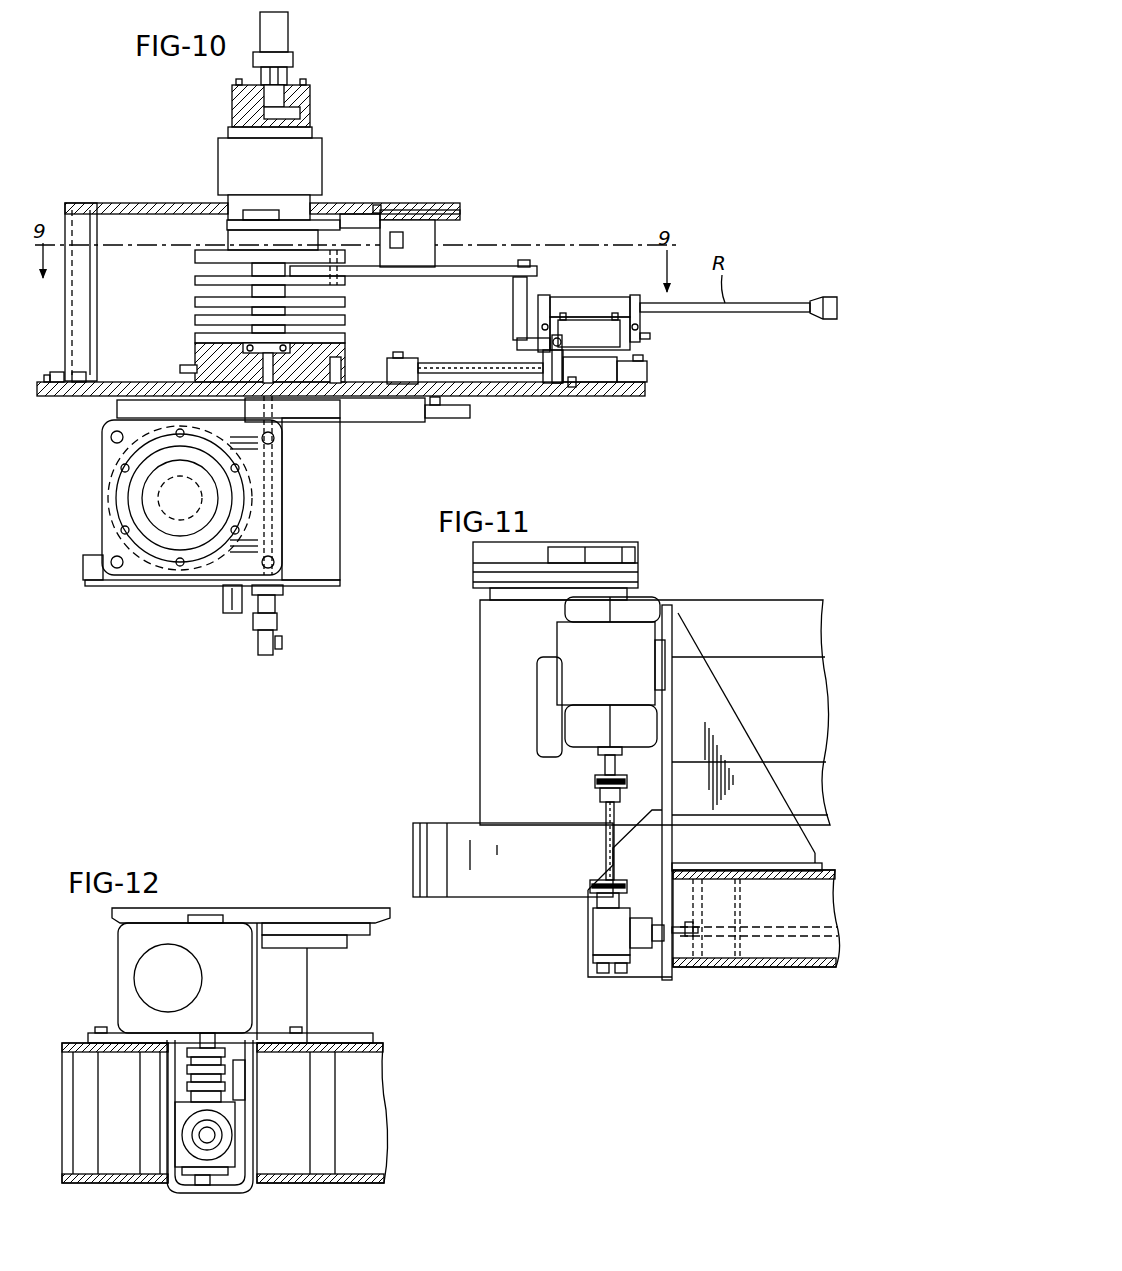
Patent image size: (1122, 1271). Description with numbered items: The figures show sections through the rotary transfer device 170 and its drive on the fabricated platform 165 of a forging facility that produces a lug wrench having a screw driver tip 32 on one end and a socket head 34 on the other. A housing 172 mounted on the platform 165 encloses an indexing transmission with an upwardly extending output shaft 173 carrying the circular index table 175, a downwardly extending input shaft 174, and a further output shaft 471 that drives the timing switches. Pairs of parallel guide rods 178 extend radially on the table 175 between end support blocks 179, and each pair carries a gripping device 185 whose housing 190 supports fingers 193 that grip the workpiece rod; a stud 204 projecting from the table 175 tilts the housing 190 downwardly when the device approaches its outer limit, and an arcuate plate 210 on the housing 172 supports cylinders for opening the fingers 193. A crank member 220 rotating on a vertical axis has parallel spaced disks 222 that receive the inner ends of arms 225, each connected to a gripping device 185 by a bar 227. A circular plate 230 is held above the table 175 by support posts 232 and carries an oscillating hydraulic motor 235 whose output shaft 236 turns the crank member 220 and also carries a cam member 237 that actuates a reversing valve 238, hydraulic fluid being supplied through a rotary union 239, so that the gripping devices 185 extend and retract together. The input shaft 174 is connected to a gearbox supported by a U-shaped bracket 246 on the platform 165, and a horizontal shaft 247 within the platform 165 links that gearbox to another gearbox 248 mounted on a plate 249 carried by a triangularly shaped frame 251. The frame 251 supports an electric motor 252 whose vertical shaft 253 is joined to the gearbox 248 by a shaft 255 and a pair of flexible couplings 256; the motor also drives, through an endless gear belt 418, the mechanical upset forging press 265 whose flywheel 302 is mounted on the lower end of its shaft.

In FIG. 10, the rotary union 239 is at (288, 30).
In FIG. 10, the oscillating hydraulic motor 235 is at (218, 152).
In FIG. 10, the output shaft 236 is at (268, 212).
In FIG. 10, the circular plate 230 is at (92, 205).
In FIG. 10, the support posts 232 is at (97, 310).
In FIG. 10, the circular index table 175 is at (600, 397).
In FIG. 10, the crank member 220 is at (208, 243).
In FIG. 10, the parallel spaced disks 222 is at (190, 294).
In FIG. 10, the output shaft 173 is at (273, 362).
In FIG. 10, the reversing valve 238 is at (413, 225).
In FIG. 10, the cam member 237 is at (345, 215).
In FIG. 10, the arms 225 is at (450, 266).
In FIG. 10, the rotary transfer device 170 is at (478, 215).
In FIG. 10, the bar 227 is at (513, 322).
In FIG. 10, the screw driver tip 32 is at (538, 300).
In FIG. 10, the fingers 193 is at (633, 296).
In FIG. 10, the housing 190 is at (636, 338).
In FIG. 10, the gripping device 185 is at (660, 335).
In FIG. 10, the socket head 34 is at (825, 295).
In FIG. 10, the stud 204 is at (572, 390).
In FIG. 10, the guide rods 178 is at (440, 363).
In FIG. 10, the end support blocks 179 is at (400, 358).
In FIG. 10, the arcuate plate 210 is at (462, 418).
In FIG. 10, the housing 172 is at (370, 480).
In FIG. 12, the housing 172 is at (307, 985).
In FIG. 10, the output shaft 471 is at (180, 498).
In FIG. 10, the input shaft 174 is at (223, 598).
In FIG. 12, the input shaft 174 is at (207, 1040).
In FIG. 11, the endless gear belt 418 is at (473, 575).
In FIG. 11, the mechanical upset forging press 265 is at (478, 750).
In FIG. 11, the electric motor 252 is at (557, 640).
In FIG. 11, the plate 249 is at (648, 845).
In FIG. 11, the triangularly shaped frame 251 is at (720, 788).
In FIG. 11, the shaft 253 is at (605, 758).
In FIG. 11, the flexible couplings 256 is at (595, 781).
In FIG. 11, the shaft 255 is at (606, 812).
In FIG. 11, the flywheel 302 is at (485, 882).
In FIG. 11, the gearbox 248 is at (593, 935).
In FIG. 11, the shaft 247 is at (690, 940).
In FIG. 12, the shaft 247 is at (215, 1135).
In FIG. 11, the fabricated platform 165 is at (812, 972).
In FIG. 12, the fabricated platform 165 is at (372, 1110).
In FIG. 12, the U-shaped bracket 246 is at (167, 1113).